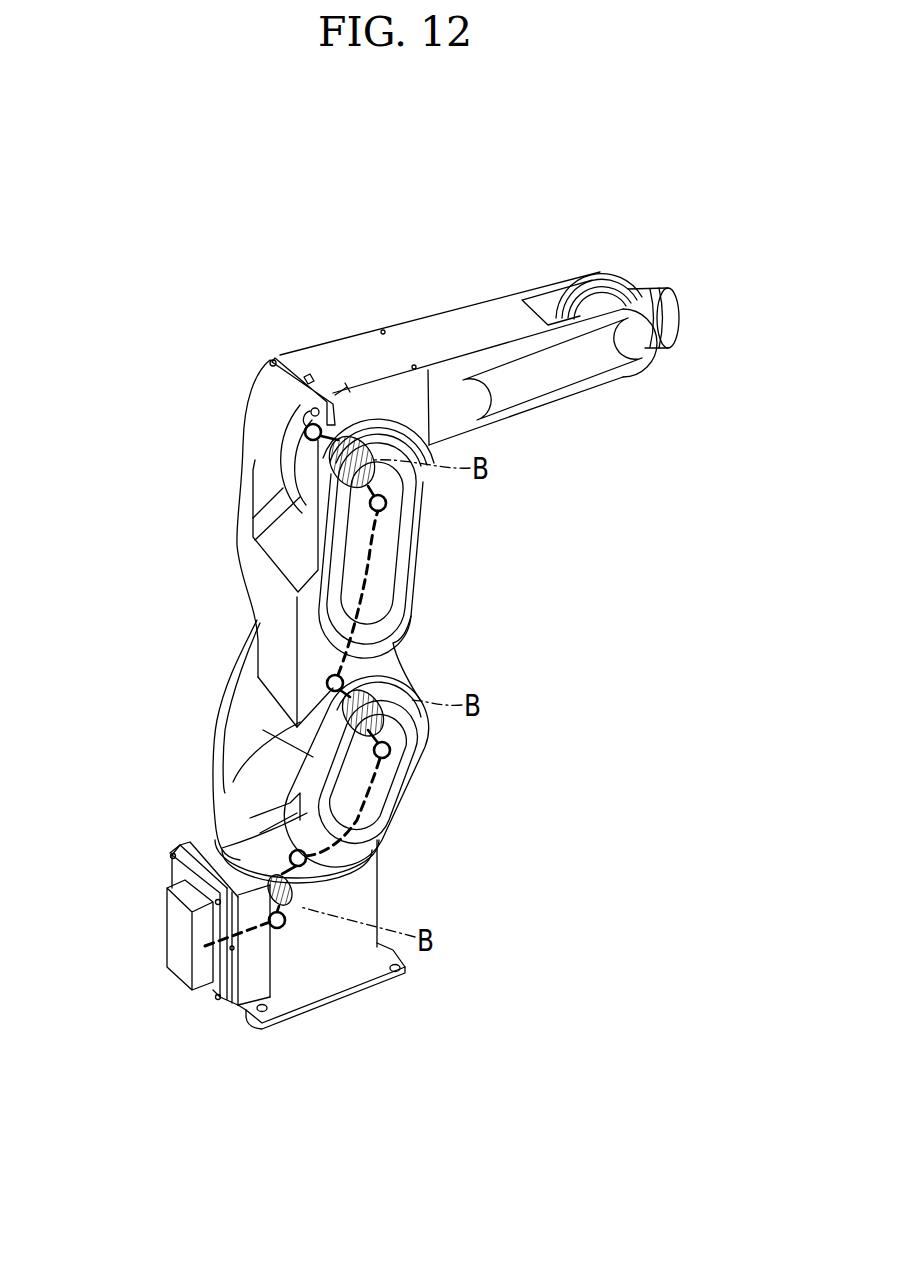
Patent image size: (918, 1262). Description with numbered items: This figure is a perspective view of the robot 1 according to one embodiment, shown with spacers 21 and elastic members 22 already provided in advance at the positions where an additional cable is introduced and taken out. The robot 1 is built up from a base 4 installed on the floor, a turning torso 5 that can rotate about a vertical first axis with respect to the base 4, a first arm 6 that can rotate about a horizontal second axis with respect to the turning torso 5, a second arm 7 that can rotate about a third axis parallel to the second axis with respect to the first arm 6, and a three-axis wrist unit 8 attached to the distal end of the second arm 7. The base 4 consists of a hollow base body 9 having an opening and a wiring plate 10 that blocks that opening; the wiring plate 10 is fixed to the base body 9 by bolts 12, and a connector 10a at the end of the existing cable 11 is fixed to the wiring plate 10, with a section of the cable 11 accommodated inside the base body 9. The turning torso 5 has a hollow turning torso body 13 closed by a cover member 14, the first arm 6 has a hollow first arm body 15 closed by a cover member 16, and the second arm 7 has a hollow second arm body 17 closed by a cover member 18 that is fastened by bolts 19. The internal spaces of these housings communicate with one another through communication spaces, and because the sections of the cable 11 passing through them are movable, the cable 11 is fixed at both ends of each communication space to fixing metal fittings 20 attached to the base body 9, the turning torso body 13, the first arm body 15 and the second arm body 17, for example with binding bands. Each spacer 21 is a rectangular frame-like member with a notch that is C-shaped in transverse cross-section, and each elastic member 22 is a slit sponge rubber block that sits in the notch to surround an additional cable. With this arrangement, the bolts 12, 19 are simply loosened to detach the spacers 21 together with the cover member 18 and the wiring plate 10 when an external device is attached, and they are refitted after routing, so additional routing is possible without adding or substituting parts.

The robot 1 is at (177, 247).
The base 4 is at (335, 1007).
The turning torso 5 is at (213, 710).
The first arm 6 is at (230, 502).
The second arm 7 is at (458, 320).
The 3-axis wrist unit 8 is at (650, 283).
The base body 9 is at (350, 962).
The wiring plate 10 is at (178, 880).
The connector 10a is at (180, 938).
The cable 11 is at (372, 795).
The bolts 12 is at (170, 854).
The turning torso body 13 is at (258, 776).
The cover member 14 is at (410, 735).
The first arm body 15 is at (263, 592).
The cover member 16 is at (387, 568).
The second arm body 17 is at (499, 312).
The cover member 18 is at (263, 433).
The bolts 19 is at (272, 364).
The fixing metal fittings 20 is at (304, 439).
The spacer 21 is at (281, 356).
The elastic member 22 is at (311, 372).